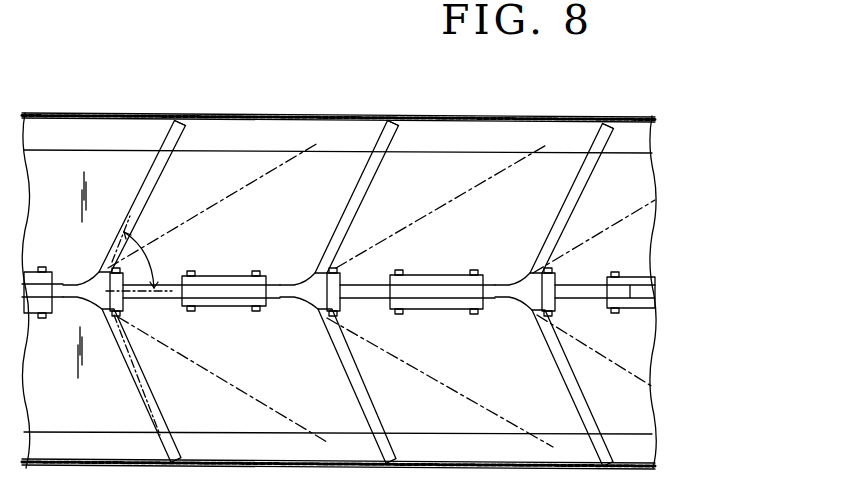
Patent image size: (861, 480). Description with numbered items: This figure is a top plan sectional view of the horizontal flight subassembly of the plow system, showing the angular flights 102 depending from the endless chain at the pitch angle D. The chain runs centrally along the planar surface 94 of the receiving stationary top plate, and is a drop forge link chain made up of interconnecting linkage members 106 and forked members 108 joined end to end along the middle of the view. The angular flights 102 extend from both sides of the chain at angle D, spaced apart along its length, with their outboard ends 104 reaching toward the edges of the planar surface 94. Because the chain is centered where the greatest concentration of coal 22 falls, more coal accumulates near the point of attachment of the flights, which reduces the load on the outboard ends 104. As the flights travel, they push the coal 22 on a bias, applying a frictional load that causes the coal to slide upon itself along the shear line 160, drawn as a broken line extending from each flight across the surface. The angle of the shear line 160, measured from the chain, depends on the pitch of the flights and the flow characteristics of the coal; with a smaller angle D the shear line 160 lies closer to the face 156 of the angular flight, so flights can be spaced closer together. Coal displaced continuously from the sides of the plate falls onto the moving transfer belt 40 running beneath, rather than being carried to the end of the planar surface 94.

The coal 22 is at (274, 193).
The moving transfer belt 40 is at (213, 440).
The planar surface 94 is at (433, 167).
The angular flights 102 is at (336, 229).
The outboard ends 104 is at (379, 138).
The interconnecting linkage members 106 is at (442, 277).
The forked members 108 is at (347, 273).
The face of the angular flight 156 is at (312, 181).
The shear line 160 is at (213, 214).
The angle D is at (145, 253).